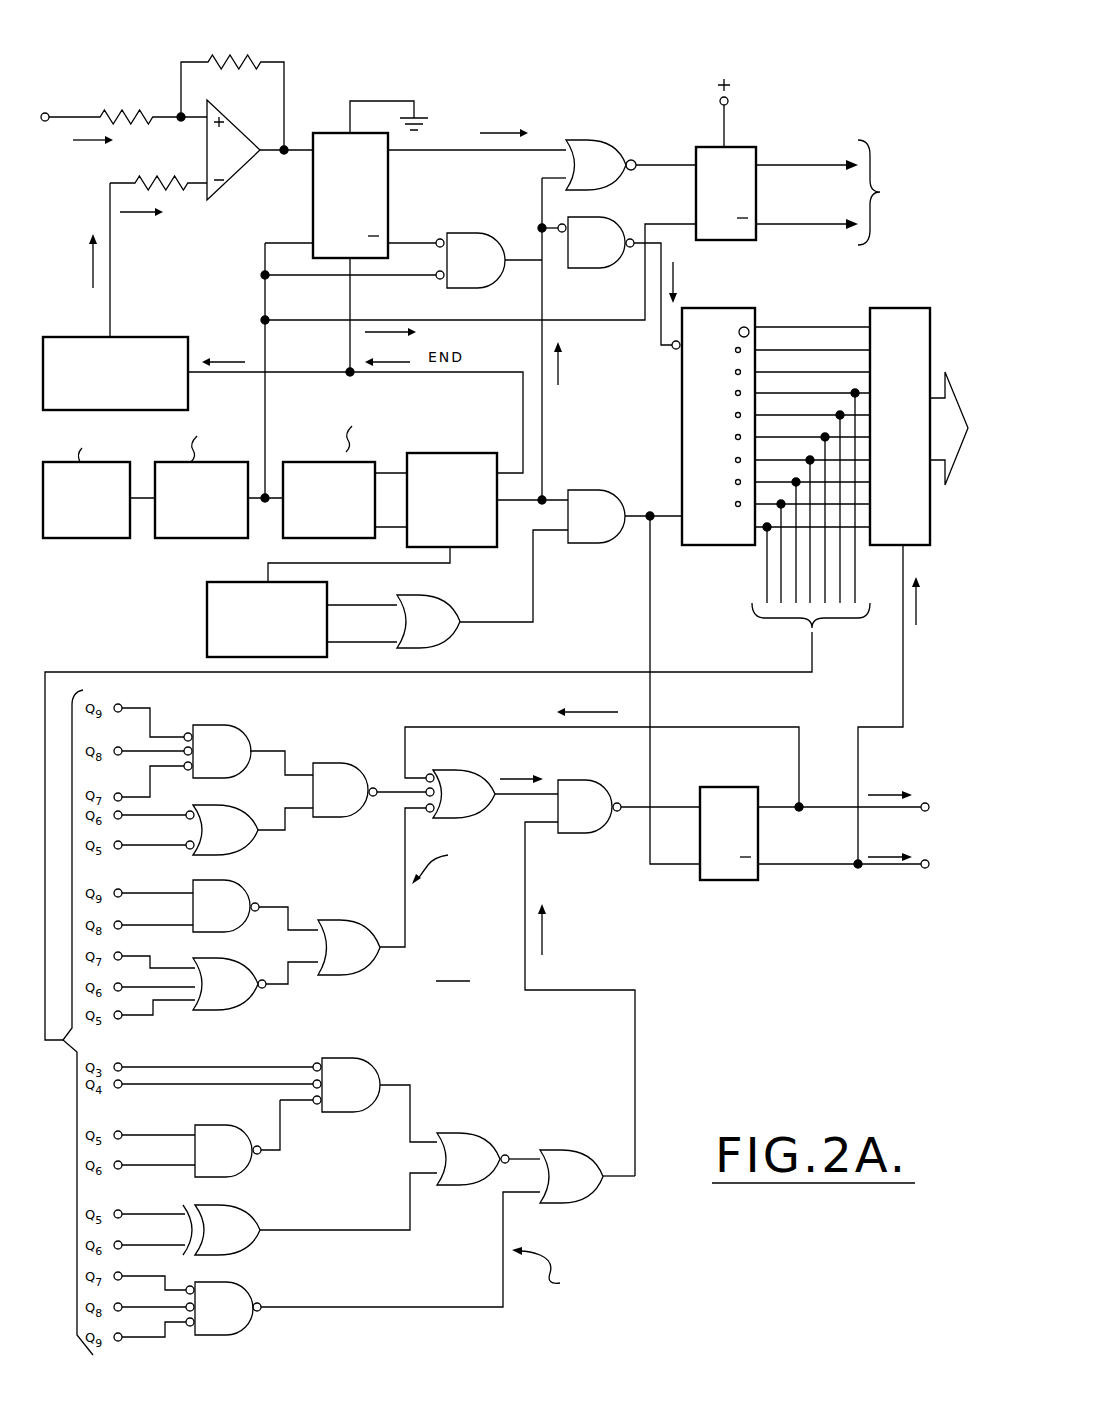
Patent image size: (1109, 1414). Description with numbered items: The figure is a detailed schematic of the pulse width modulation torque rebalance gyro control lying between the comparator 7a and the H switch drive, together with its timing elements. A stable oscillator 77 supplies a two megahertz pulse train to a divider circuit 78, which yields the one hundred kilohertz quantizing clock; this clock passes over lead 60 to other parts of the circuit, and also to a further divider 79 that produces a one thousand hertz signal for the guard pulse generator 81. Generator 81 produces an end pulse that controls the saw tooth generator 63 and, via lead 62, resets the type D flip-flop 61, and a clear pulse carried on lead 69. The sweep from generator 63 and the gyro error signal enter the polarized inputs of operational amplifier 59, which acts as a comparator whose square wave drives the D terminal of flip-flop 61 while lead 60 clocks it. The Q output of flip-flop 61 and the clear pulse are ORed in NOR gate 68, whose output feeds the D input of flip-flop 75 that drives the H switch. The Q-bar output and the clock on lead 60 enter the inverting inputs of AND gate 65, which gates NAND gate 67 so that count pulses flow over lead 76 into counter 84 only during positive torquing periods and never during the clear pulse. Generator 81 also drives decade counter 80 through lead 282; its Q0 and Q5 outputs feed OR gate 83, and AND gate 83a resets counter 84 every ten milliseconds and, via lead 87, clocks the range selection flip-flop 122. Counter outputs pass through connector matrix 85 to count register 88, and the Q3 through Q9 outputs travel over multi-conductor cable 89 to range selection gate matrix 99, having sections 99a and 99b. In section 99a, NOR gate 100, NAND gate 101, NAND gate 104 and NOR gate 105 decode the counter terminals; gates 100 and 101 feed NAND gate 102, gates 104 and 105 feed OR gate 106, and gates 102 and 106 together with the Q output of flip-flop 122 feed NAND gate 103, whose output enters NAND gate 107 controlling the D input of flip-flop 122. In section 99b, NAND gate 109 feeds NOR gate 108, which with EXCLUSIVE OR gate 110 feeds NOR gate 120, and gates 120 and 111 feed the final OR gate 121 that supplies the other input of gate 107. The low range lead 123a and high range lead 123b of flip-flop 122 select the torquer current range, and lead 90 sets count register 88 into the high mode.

The comparator 7a is at (284, 62).
The operational amplifier 59 is at (240, 170).
The lead 60 is at (265, 243).
The type D flip-flop 61 is at (322, 133).
The lead 62 is at (350, 290).
The saw tooth generator 63 is at (163, 337).
The AND gate 65 is at (470, 233).
The NAND gate 67 is at (572, 268).
The NOR gate 68 is at (593, 140).
The lead 69 is at (545, 327).
The flip-flop 75 is at (748, 147).
The lead 76 is at (661, 258).
The oscillator 77 is at (80, 538).
The divider circuit 78 is at (175, 538).
The divider 79 is at (300, 462).
The decade counter 80 is at (207, 625).
The guard pulse generator 81 is at (465, 429).
The OR gate 83 is at (450, 643).
The AND gate 83a is at (600, 490).
The counter 84 is at (740, 308).
The connector matrix 85 is at (812, 326).
The lead 87 is at (650, 620).
The count register 88 is at (920, 308).
The multi-conductor cable 89 is at (750, 672).
The lead 90 is at (903, 655).
The range selection gate matrix 99 is at (266, 1022).
The upper matrix portion 99a is at (449, 864).
The lower matrix portion 99b is at (555, 1270).
The NOR gate 100 is at (215, 725).
The NAND gate 101 is at (238, 782).
The NAND gate 102 is at (345, 763).
The NAND gate 103 is at (462, 770).
The NAND gate 104 is at (242, 856).
The NOR gate 105 is at (242, 934).
The OR gate 106 is at (352, 920).
The NAND gate 107 is at (580, 833).
The NOR gate 108 is at (378, 1058).
The NAND gate 109 is at (218, 1125).
The EXCLUSIVE OR gate 110 is at (255, 1205).
The NAND gate 111 is at (255, 1282).
The NOR gate 120 is at (472, 1133).
The OR gate 121 is at (578, 1150).
The range selection flip-flop 122 is at (728, 880).
The low range lead 123a is at (925, 812).
The high range lead 123b is at (937, 854).
The lead 282 is at (450, 563).